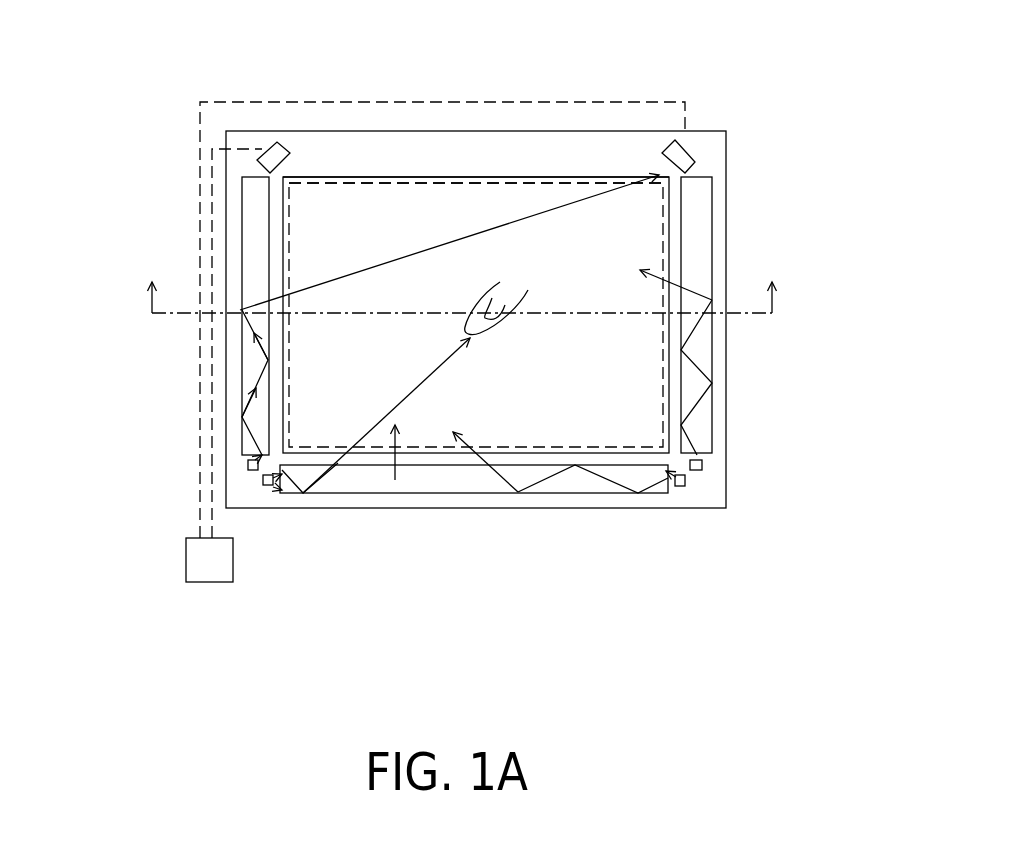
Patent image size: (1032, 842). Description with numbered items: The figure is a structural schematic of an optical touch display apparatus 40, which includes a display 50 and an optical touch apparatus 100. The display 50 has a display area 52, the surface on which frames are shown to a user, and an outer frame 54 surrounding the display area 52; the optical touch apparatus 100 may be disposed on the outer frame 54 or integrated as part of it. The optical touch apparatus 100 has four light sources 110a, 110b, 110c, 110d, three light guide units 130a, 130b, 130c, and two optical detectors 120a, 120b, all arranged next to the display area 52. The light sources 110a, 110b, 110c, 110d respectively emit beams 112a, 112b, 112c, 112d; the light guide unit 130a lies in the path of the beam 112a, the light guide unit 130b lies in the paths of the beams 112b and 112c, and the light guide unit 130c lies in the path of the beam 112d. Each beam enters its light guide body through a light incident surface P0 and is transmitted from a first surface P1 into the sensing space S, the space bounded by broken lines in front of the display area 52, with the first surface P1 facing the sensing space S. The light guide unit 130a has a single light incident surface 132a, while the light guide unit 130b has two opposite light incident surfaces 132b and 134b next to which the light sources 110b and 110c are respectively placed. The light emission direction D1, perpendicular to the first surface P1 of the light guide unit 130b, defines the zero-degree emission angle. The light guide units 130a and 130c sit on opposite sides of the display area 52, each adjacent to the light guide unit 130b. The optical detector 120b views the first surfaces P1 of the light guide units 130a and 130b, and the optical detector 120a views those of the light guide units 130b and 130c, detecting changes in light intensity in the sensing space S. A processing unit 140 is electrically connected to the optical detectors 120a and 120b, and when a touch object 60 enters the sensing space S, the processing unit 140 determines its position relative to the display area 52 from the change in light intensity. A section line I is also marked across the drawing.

The optical touch apparatus 100 is at (158, 603).
The optical touch display apparatus 40 is at (820, 705).
The display 50 is at (528, 55).
The display area 52 is at (408, 203).
The outer frame 54 is at (497, 153).
The sensing space S is at (550, 183).
The touch object 60 is at (517, 287).
The optical detector 120a is at (268, 148).
The optical detector 120b is at (690, 155).
The light guide unit 130a is at (248, 228).
The light guide unit 130b is at (485, 482).
The light guide unit 130c is at (703, 217).
The light source 110a is at (250, 465).
The light source 110b is at (267, 488).
The light source 110c is at (677, 487).
The light source 110d is at (703, 468).
The beam 112a is at (250, 370).
The beam 112b is at (330, 475).
The beam 112c is at (600, 478).
The beam 112d is at (697, 332).
The light incident surface 132a is at (264, 473).
The light incident surface 132b is at (266, 482).
The light incident surface 134b is at (698, 478).
The light incident surface P0 is at (703, 466).
The first surface P1 is at (270, 258).
The light emission direction D1 is at (395, 470).
The processing unit 140 is at (210, 570).
The section line I- I is at (472, 294).